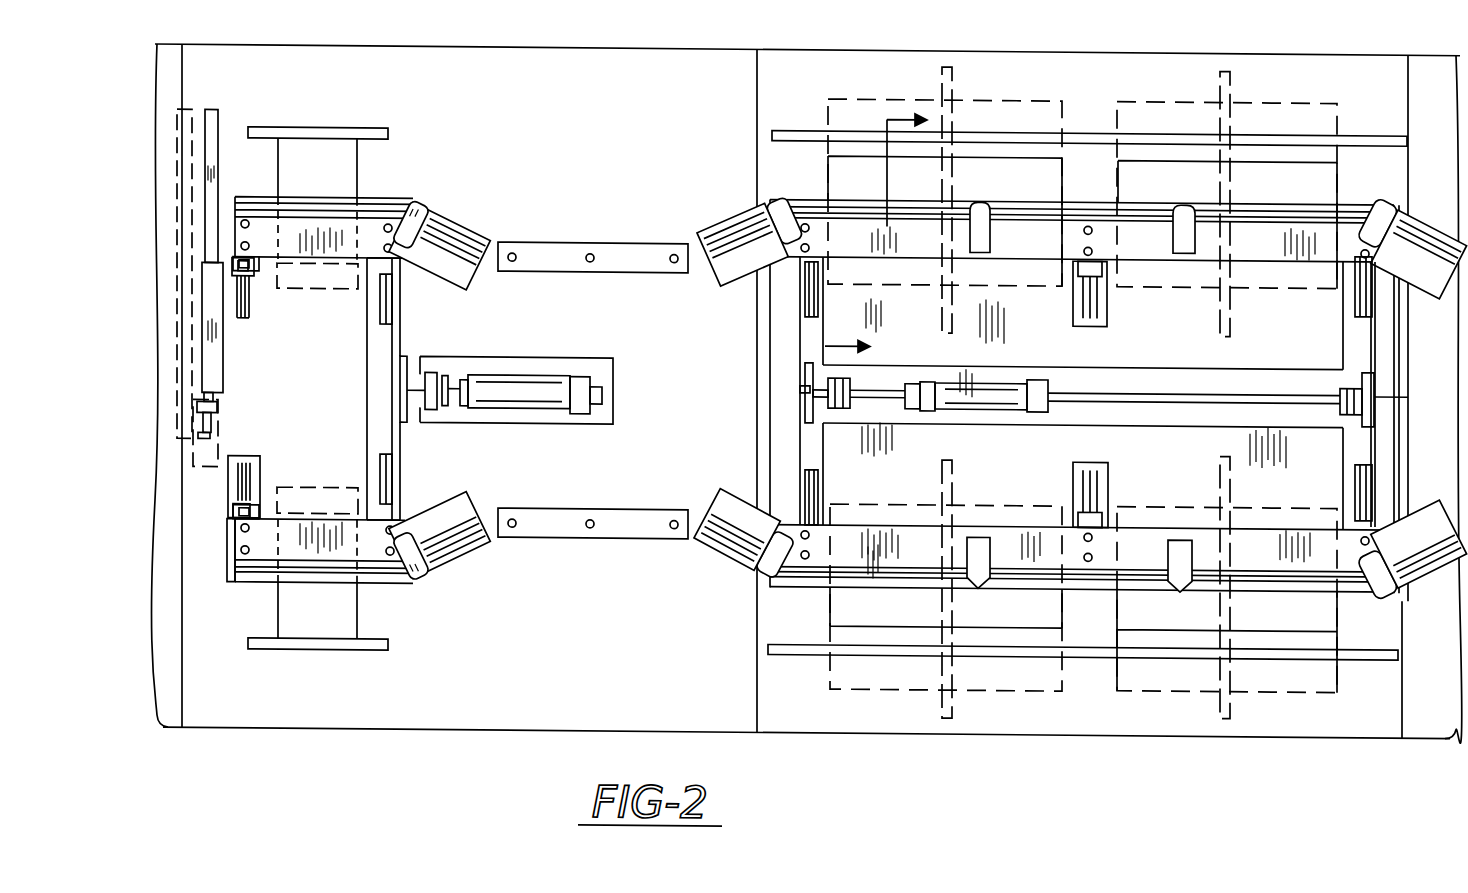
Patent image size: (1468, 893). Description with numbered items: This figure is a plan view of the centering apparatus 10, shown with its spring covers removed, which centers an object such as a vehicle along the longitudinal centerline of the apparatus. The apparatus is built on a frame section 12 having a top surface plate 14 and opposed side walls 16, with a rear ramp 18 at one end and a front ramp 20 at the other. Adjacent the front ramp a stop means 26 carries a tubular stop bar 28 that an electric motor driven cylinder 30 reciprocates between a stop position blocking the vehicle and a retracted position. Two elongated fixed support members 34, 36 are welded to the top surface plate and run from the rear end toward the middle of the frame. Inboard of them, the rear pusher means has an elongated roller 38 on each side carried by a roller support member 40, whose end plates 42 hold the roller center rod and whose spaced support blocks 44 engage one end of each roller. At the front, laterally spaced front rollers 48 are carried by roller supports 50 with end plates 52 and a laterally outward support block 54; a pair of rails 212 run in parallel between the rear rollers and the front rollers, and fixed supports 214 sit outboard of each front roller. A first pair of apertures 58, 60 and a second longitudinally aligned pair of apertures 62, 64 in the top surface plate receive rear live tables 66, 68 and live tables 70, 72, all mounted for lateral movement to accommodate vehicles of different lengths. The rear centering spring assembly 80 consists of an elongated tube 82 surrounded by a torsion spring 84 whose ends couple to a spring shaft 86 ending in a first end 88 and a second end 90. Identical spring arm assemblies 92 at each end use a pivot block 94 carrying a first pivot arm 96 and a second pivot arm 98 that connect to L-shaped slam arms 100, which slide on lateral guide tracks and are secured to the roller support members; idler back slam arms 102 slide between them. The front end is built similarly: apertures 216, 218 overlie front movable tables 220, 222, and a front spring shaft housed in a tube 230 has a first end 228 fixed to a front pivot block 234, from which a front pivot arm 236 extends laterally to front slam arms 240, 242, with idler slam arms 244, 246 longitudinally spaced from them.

The centering apparatus 10 is at (558, 40).
The frame section 12 is at (443, 732).
The top surface plate 14 is at (717, 708).
The side walls 16 is at (338, 727).
The first end ramp 18 is at (1430, 716).
The second end ramp 20 is at (166, 712).
The stop means 26 is at (240, 102).
The tubular stop bar 28 is at (214, 166).
The electric motor driven cylinder 30 is at (222, 362).
The fixed support member 34 is at (782, 125).
The fixed support member 36 is at (795, 649).
The elongated roller 38 is at (1082, 192).
The roller support member 40 is at (1256, 238).
The plates 42 is at (713, 263).
The support blocks 44 is at (760, 201).
The front rollers 48 is at (500, 235).
The roller supports 50 is at (342, 237).
The end plates 52 is at (242, 262).
The support block 54 is at (458, 236).
The aperture 58 is at (1318, 162).
The aperture 60 is at (1330, 600).
The aperture 62 is at (833, 178).
The aperture 64 is at (830, 604).
The rear live table 66 is at (1255, 173).
The rear live table 68 is at (1133, 604).
The live table 70 is at (967, 150).
The live table 72 is at (898, 603).
The rear centering spring assembly 80 is at (1060, 397).
The elongated tube 82 is at (982, 395).
The torsion spring 84 is at (988, 375).
The spring shaft 86 is at (1147, 391).
The first end 88 is at (798, 385).
The second end 90 is at (1408, 386).
The spring arm assemblies 92 is at (828, 414).
The pivot block 94 is at (803, 377).
The first pivot arm 96 is at (798, 475).
The second pivot arm 98 is at (800, 328).
The slam arms 100 is at (822, 264).
The idler back slam arms 102 is at (1090, 261).
The rails 212 is at (628, 238).
The fixed supports 214 is at (350, 128).
The aperture 216 is at (358, 176).
The aperture 218 is at (357, 591).
The front movable table 220 is at (335, 146).
The front movable table 222 is at (297, 622).
The first end 228 is at (400, 389).
The tube 230 is at (545, 401).
The front pivot block 234 is at (395, 339).
The front pivot arm 236 is at (395, 437).
The front slam arm 240 is at (395, 472).
The front slam arm 242 is at (392, 295).
The idler slam arm 244 is at (250, 474).
The idler slam arm 246 is at (240, 307).